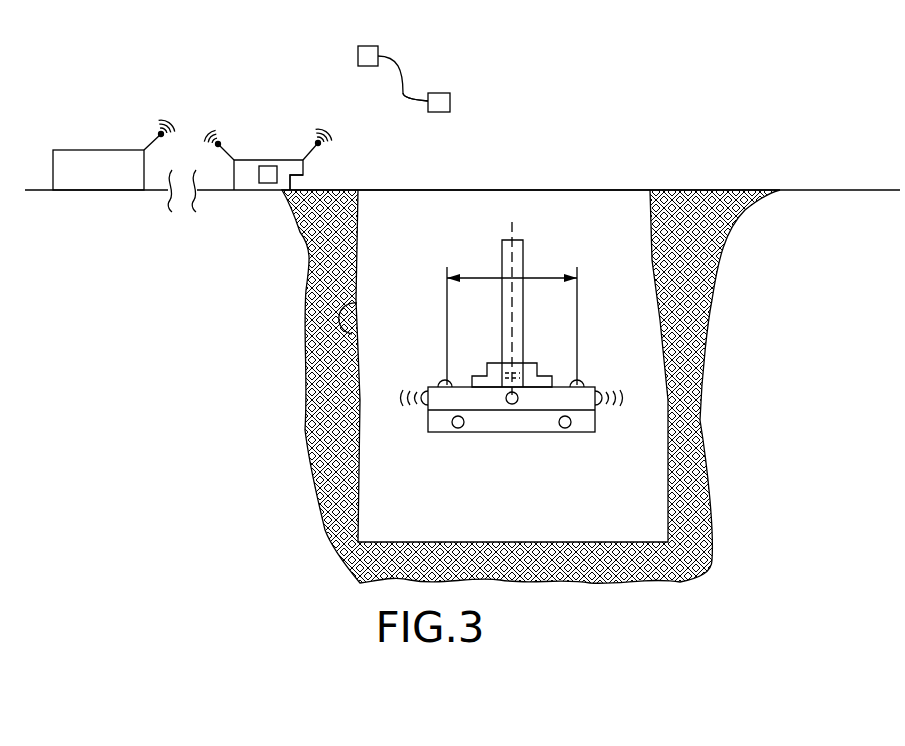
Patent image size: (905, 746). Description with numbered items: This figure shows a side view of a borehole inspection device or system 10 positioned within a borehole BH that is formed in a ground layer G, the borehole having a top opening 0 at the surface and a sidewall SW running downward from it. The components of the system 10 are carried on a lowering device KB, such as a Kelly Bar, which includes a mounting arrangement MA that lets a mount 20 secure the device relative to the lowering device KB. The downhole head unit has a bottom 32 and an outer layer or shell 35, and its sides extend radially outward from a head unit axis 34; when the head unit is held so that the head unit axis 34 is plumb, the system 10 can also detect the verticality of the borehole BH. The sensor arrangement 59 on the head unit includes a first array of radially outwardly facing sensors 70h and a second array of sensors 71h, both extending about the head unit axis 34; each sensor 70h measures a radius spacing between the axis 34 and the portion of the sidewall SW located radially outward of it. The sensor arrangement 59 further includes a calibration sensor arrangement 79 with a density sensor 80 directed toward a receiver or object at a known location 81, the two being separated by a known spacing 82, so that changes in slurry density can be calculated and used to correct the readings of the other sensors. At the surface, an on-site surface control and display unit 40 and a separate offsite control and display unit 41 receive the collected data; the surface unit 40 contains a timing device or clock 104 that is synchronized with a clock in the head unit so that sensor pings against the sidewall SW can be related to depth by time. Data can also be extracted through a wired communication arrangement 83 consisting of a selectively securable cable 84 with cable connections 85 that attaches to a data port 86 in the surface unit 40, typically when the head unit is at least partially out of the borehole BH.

The borehole inspection device or system 10 is at (188, 90).
The offsite control and/or display unit 41 is at (93, 150).
The surface control and/or display unit 40 is at (292, 165).
The timing device or clock 104 is at (268, 182).
The data port 86 is at (300, 182).
The wired communication arrangement 83 is at (401, 85).
The selectively securable cable 84 is at (403, 94).
The cable connections 85 is at (357, 58).
The borehole BH is at (397, 205).
The top opening 0 is at (538, 205).
The ground layer G is at (702, 190).
The sidewall SW is at (352, 334).
The head unit axis 34 is at (505, 240).
The known spacing 82 is at (488, 278).
The lowering device KB is at (525, 255).
The calibration sensor arrangement 79 is at (437, 330).
The density sensor 80 is at (440, 383).
The receiver at known location 81 is at (585, 383).
The mounting arrangement MA is at (507, 385).
The mount 20 is at (532, 374).
The sensor arrangement 59 is at (648, 388).
The outer layer or shell 35 is at (601, 392).
The radially outwardly facing sensors 70h is at (634, 402).
The bottom 32 is at (445, 434).
The second array of sensors 71h is at (458, 429).